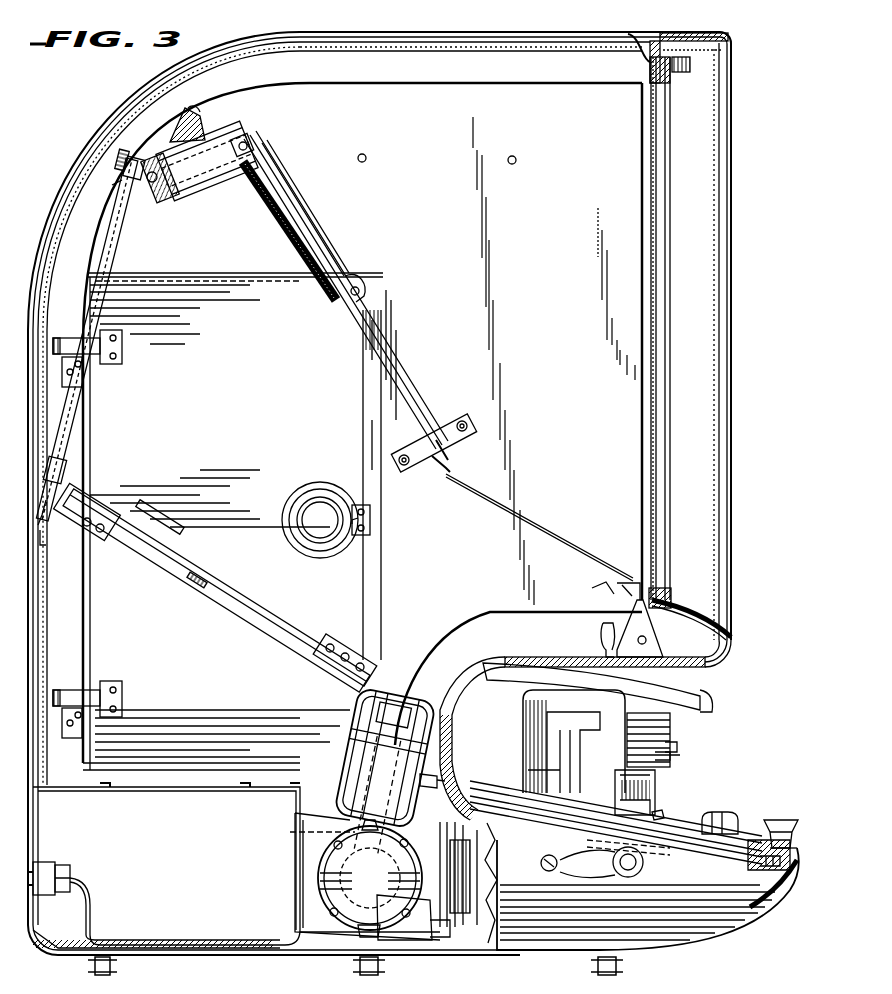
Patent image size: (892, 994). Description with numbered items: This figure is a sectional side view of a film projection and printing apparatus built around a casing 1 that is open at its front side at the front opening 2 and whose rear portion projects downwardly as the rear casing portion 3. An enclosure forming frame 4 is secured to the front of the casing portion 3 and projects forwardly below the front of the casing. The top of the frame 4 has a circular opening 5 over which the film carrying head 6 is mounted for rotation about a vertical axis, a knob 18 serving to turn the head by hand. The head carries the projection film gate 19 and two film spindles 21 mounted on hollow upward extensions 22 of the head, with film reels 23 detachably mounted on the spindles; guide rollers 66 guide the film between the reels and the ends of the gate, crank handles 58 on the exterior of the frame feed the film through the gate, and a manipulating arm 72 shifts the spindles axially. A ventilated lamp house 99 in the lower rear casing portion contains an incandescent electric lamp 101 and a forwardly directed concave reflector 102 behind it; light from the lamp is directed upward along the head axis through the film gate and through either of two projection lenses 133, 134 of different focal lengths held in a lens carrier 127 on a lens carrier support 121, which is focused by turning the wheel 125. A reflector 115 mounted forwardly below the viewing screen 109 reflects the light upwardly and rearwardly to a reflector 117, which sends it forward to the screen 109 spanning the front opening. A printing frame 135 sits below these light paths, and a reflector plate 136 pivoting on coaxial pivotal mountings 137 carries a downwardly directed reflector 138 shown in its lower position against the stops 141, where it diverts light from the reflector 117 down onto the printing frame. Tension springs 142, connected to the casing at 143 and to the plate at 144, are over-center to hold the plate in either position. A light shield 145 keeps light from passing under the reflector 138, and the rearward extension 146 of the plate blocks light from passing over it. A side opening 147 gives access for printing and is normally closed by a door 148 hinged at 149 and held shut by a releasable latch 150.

The casing 1 is at (383, 32).
The front opening 2 is at (700, 50).
The downwardly projecting rear casing portion 3 is at (180, 935).
The enclosure forming frame 4 is at (688, 935).
The circular opening 5 is at (772, 868).
The film carrying head 6 is at (756, 840).
The knob 18 is at (782, 820).
The projection film gate 19 is at (660, 812).
The film spindles 21 is at (680, 760).
The hollow upward extensions 22 is at (580, 822).
The film reels 23 is at (690, 716).
The crank handles 58 is at (541, 866).
The guide rollers 66 is at (665, 818).
The manipulating arm 72 is at (716, 812).
The ventilated lamp house 99 is at (346, 738).
The incandescent electric lamp 101 is at (344, 785).
The concave reflector 102 is at (292, 836).
The viewing screen 109 is at (658, 232).
The reflector 115 is at (614, 624).
The reflector 117 is at (78, 420).
The lens carrier support 121 is at (520, 712).
The wheel 125 is at (478, 770).
The lens carrier 127 is at (680, 748).
The projection lens 133 is at (672, 735).
The projection lens 134 is at (452, 744).
The printing frame 135 is at (245, 593).
The reflector plate 136 is at (362, 312).
The pivotal mountings 137 is at (250, 135).
The reflector 138 is at (350, 312).
The stops 141 is at (432, 472).
The tension springs 142 is at (286, 222).
The spring connection to casing 143 is at (190, 112).
The spring connection to reflector plate 144 is at (366, 286).
The light shield 145 is at (560, 538).
The rearward extension of reflector plate 146 is at (283, 183).
The side opening 147 is at (190, 273).
The door 148 is at (252, 282).
The hinge 149 is at (68, 340).
The releasable latch 150 is at (372, 528).